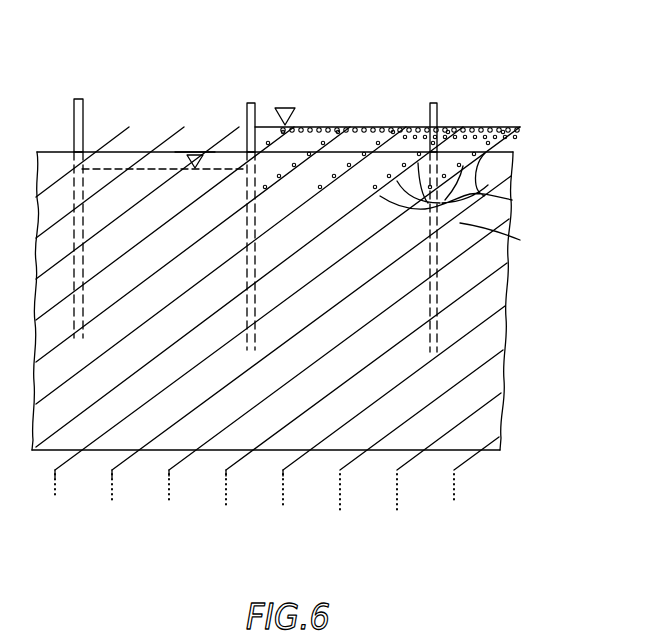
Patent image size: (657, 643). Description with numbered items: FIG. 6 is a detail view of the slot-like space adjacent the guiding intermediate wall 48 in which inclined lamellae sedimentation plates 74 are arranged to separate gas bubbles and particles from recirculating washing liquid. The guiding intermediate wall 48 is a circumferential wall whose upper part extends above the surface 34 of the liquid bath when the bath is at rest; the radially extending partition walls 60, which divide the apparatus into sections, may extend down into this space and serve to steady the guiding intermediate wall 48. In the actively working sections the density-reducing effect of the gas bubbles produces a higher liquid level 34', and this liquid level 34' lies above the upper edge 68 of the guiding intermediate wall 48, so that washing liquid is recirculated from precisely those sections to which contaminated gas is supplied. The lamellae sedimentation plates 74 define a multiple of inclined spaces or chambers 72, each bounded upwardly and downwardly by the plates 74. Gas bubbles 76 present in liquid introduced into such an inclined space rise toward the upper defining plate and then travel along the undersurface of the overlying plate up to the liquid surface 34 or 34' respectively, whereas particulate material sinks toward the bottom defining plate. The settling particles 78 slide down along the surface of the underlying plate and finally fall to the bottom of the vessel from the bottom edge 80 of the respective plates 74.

The surface of the liquid bath 34 is at (163, 95).
The higher liquid level 34' is at (387, 80).
The guiding intermediate wall 48 is at (487, 179).
The partition walls 60 is at (73, 193).
The upper edge of the guiding intermediate wall 68 is at (192, 152).
The inclined spaces or chambers 72 is at (358, 427).
The inclined lamellae sedimentation plates 74 is at (463, 223).
The gas bubbles 76 is at (388, 124).
The settling particles 78 is at (167, 485).
The bottom edge of the plates 80 is at (223, 470).